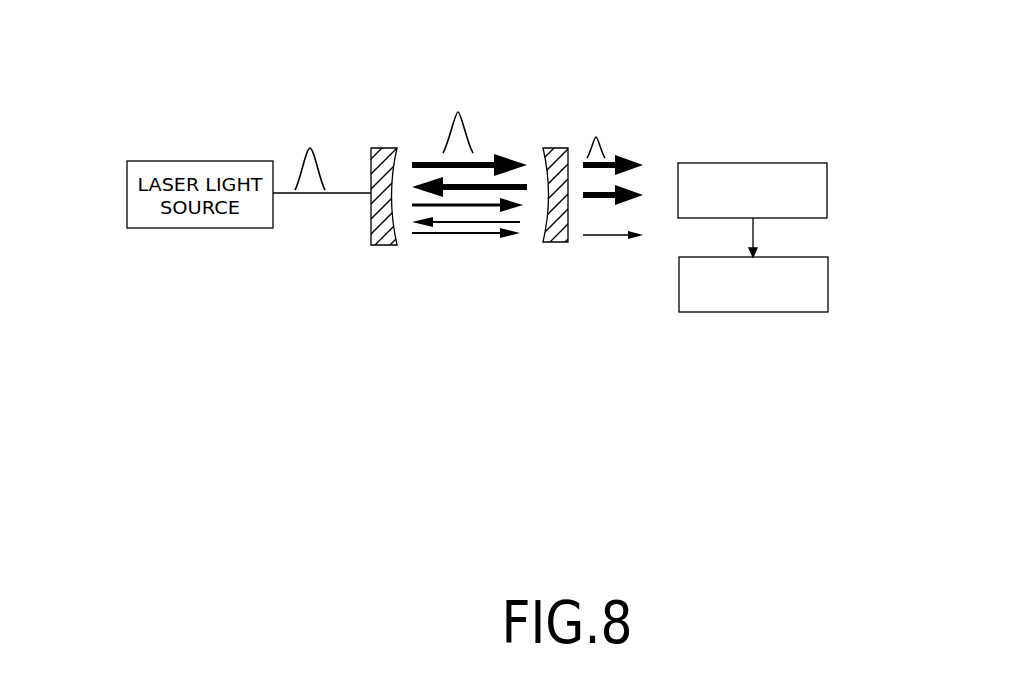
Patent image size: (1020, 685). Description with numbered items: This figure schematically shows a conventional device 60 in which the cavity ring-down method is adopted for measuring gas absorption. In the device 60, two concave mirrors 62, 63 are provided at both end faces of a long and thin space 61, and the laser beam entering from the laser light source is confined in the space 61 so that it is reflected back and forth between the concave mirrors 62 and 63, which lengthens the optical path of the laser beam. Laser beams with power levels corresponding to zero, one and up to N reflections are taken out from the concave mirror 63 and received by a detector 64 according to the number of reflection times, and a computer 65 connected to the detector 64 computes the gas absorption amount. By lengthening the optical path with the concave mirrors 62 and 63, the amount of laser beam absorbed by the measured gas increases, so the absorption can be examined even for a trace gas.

The conventional device 60 is at (515, 184).
The long and thin space 61 is at (502, 136).
The concave mirror 62 is at (383, 245).
The concave mirror 63 is at (561, 243).
The detector 64 is at (827, 190).
The computer 65 is at (828, 283).